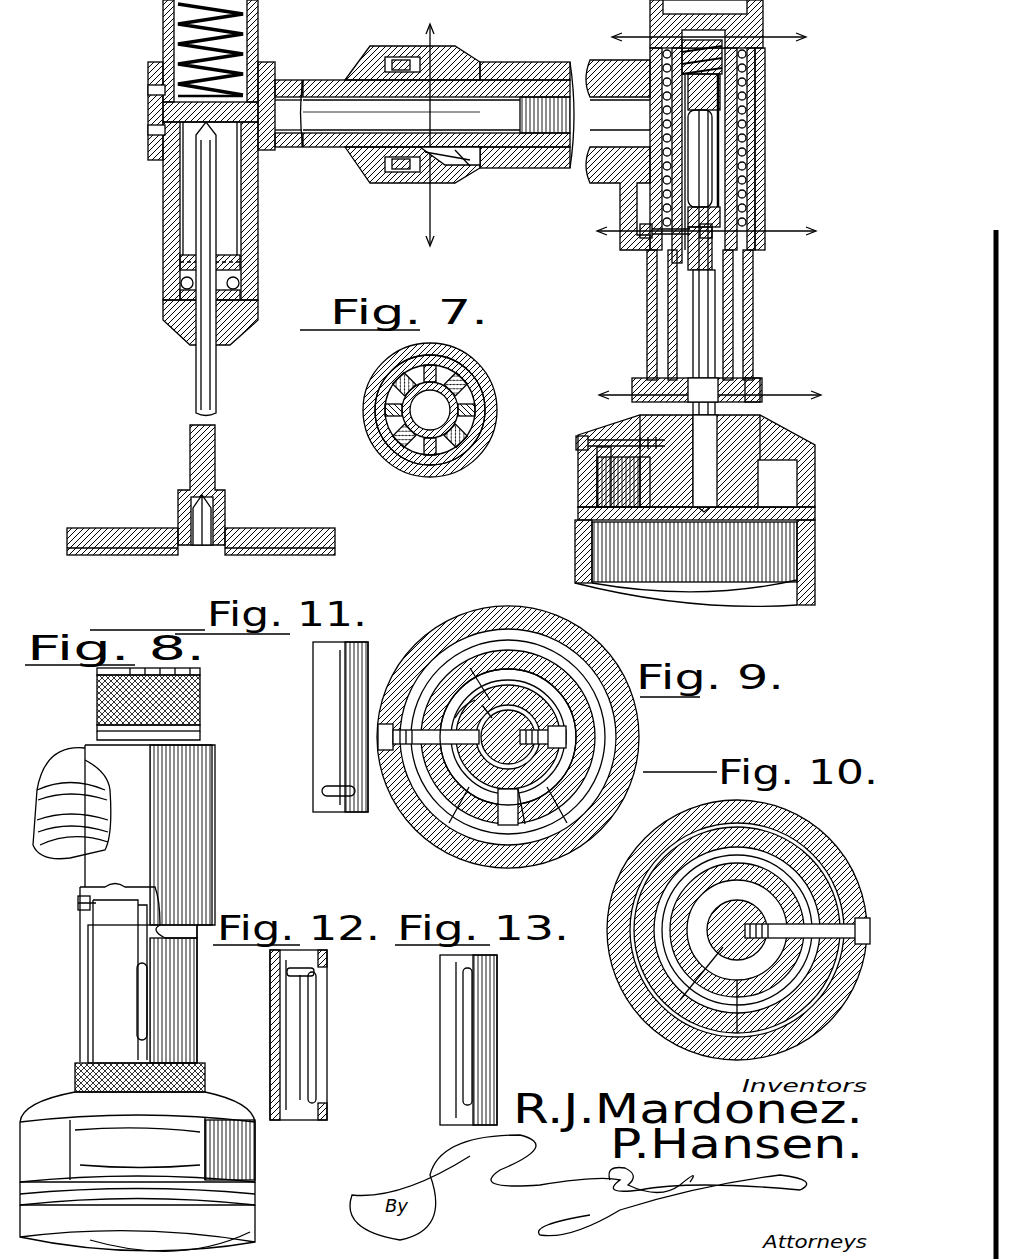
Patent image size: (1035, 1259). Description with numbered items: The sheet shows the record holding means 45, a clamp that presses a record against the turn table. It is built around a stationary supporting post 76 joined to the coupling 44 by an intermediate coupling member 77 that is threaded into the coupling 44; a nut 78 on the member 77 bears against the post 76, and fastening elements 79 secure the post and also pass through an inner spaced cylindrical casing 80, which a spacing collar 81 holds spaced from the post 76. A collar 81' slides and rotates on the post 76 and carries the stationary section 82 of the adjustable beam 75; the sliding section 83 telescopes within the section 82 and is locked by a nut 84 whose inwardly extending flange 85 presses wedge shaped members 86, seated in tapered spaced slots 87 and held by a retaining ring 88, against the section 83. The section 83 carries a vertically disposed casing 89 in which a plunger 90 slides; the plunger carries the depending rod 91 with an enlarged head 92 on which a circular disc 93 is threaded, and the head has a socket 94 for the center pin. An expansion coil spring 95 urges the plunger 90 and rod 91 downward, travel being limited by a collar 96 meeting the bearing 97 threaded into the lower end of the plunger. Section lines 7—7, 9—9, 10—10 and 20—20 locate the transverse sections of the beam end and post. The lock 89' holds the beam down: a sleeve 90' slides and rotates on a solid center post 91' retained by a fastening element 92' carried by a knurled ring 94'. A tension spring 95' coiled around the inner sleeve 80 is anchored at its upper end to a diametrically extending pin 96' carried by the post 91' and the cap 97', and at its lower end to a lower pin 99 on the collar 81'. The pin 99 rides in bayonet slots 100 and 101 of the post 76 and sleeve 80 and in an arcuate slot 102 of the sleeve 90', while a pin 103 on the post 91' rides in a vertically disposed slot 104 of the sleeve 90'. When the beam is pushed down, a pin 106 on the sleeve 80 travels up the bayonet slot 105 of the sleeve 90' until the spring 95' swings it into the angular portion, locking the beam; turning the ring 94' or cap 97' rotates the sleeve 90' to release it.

In FIG. 6, the section line 7— 7 is at (429, 135).
In FIG. 6, the section line 9— 9 is at (703, 231).
In FIG. 6, the section line 10— 10 is at (706, 395).
In FIG. 6, the section line 20- 20 is at (711, 38).
In FIG. 6, the coupling 44 is at (815, 586).
In FIG. 8, the coupling 44 is at (258, 1230).
In FIG. 6, the record holding means 45 is at (505, 72).
In FIG. 8, the record holding means 45 is at (72, 785).
In FIG. 6, the adjustable beam 75 is at (328, 80).
In FIG. 6, the stationary supporting post 76 is at (755, 370).
In FIG. 8, the stationary supporting post 76 is at (175, 1012).
In FIG. 9, the stationary supporting post 76 is at (557, 823).
In FIG. 10, the stationary supporting post 76 is at (773, 817).
In FIG. 6, the intermediate coupling member 77 is at (806, 512).
In FIG. 8, the intermediate coupling member 77 is at (258, 1197).
In FIG. 6, the nut 78 is at (800, 470).
In FIG. 8, the nut 78 is at (220, 1164).
In FIG. 6, the fastening elements 79 is at (580, 444).
In FIG. 6, the inner spaced cylindrical casing 80 is at (735, 336).
In FIG. 9, the inner spaced cylindrical casing 80 is at (607, 758).
In FIG. 10, the inner spaced cylindrical casing 80 is at (780, 870).
In FIG. 6, the spacing collar 81 is at (591, 480).
In FIG. 8, the spacing collar 81 is at (171, 896).
In FIG. 9, the spacing collar 81 is at (499, 774).
In FIG. 6, the collar 81' is at (739, 149).
In FIG. 6, the stationary section of beam 82 is at (520, 160).
In FIG. 7, the stationary section of beam 82 is at (497, 414).
In FIG. 6, the sliding section of beam 83 is at (336, 146).
In FIG. 6, the nut 84 is at (445, 62).
In FIG. 7, the nut 84 is at (500, 396).
In FIG. 6, the inwardly extending flange 85 is at (362, 182).
In FIG. 6, the wedge shaped members 86 is at (428, 160).
In FIG. 7, the wedge shaped members 86 is at (458, 362).
In FIG. 6, the tapered spaced slots 87 is at (462, 170).
In FIG. 7, the tapered spaced slots 87 is at (368, 388).
In FIG. 6, the retaining ring 88 is at (395, 57).
In FIG. 6, the vertically disposed casing 89 is at (239, 277).
In FIG. 6, the lock 89' is at (750, 155).
In FIG. 9, the lock 89' is at (558, 728).
In FIG. 11, the lock 89' is at (367, 719).
In FIG. 12, the lock 89' is at (322, 1035).
In FIG. 13, the lock 89' is at (492, 1040).
In FIG. 6, the plunger 90 is at (200, 181).
In FIG. 6, the sleeve 90' is at (616, 155).
In FIG. 9, the sleeve 90' is at (515, 693).
In FIG. 11, the sleeve 90' is at (308, 727).
In FIG. 12, the sleeve 90' is at (333, 1037).
In FIG. 13, the sleeve 90' is at (497, 1040).
In FIG. 6, the depending rod 91 is at (179, 269).
In FIG. 6, the solid center post 91' is at (656, 293).
In FIG. 9, the solid center post 91' is at (561, 690).
In FIG. 10, the solid center post 91' is at (666, 1005).
In FIG. 6, the enlarged head 92 is at (223, 485).
In FIG. 6, the fastening element 92' is at (793, 387).
In FIG. 10, the fastening element 92' is at (774, 924).
In FIG. 6, the circular disc 93 is at (272, 540).
In FIG. 10, the circular disc 93 is at (790, 967).
In FIG. 6, the socket 94 is at (198, 545).
In FIG. 10, the socket 94 is at (814, 908).
In FIG. 6, the knurled ring 94' is at (674, 374).
In FIG. 8, the knurled ring 94' is at (164, 1065).
In FIG. 6, the expansion coil spring 95 is at (185, 51).
In FIG. 6, the tension spring 95' is at (746, 133).
In FIG. 9, the tension spring 95' is at (508, 739).
In FIG. 6, the collar 96 is at (239, 188).
In FIG. 6, the diametrically extending pin 96' is at (734, 24).
In FIG. 6, the bearing 97 is at (231, 328).
In FIG. 8, the cap 97' is at (180, 699).
In FIG. 6, the lower pin 99 is at (645, 240).
In FIG. 8, the lower pin 99 is at (85, 912).
In FIG. 9, the lower pin 99 is at (420, 757).
In FIG. 8, the bayonet slot 100 is at (148, 978).
In FIG. 9, the bayonet slot 100 is at (503, 797).
In FIG. 9, the bayonet slot 101 is at (527, 838).
In FIG. 9, the arcuate slot 102 is at (493, 830).
In FIG. 11, the arcuate slot 102 is at (333, 797).
In FIG. 6, the outwardly extending pin 103 is at (766, 200).
In FIG. 9, the outwardly extending pin 103 is at (600, 706).
In FIG. 6, the vertically disposed slot 104 is at (737, 192).
In FIG. 9, the vertically disposed slot 104 is at (580, 778).
In FIG. 12, the vertically disposed slot 104 is at (322, 1098).
In FIG. 13, the vertically disposed slot 104 is at (466, 1064).
In FIG. 9, the bayonet slot 105 is at (470, 672).
In FIG. 12, the bayonet slot 105 is at (315, 996).
In FIG. 9, the pin 106 is at (488, 660).